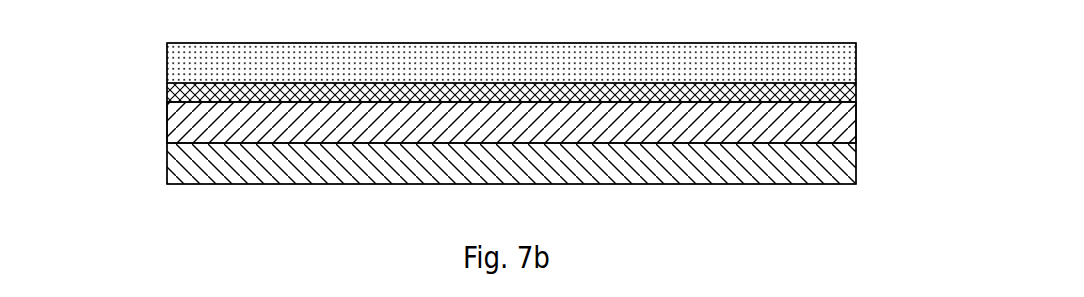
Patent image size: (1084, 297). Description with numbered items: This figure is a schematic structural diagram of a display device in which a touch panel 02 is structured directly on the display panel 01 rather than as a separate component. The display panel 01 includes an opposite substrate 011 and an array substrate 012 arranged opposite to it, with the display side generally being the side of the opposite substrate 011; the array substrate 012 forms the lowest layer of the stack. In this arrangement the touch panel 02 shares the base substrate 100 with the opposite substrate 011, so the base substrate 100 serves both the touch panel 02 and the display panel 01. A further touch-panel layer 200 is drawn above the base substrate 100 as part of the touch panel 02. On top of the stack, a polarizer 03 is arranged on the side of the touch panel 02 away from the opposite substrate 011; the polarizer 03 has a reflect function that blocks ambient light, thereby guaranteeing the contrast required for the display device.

The display panel 01 is at (565, 141).
The opposite substrate 011 is at (833, 119).
The array substrate 012 is at (549, 163).
The touch panel 02 is at (456, 113).
The base substrate 100 is at (192, 124).
The second functional layer 200 is at (167, 93).
The polarizer 03 is at (198, 63).